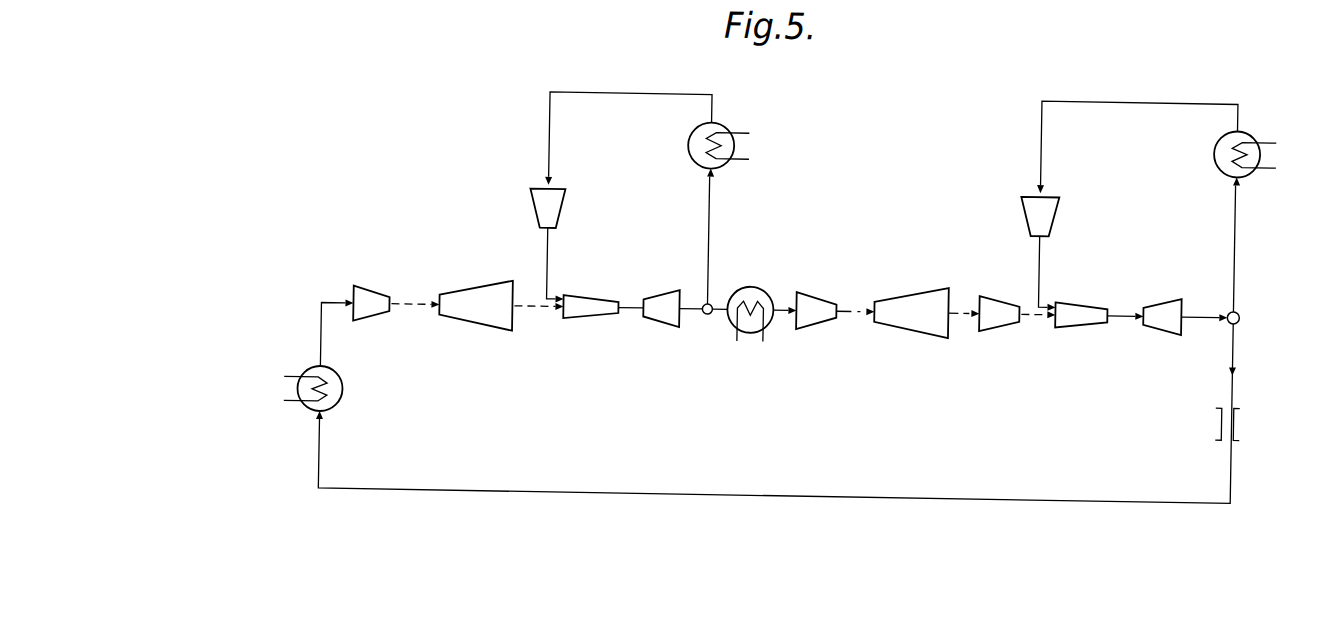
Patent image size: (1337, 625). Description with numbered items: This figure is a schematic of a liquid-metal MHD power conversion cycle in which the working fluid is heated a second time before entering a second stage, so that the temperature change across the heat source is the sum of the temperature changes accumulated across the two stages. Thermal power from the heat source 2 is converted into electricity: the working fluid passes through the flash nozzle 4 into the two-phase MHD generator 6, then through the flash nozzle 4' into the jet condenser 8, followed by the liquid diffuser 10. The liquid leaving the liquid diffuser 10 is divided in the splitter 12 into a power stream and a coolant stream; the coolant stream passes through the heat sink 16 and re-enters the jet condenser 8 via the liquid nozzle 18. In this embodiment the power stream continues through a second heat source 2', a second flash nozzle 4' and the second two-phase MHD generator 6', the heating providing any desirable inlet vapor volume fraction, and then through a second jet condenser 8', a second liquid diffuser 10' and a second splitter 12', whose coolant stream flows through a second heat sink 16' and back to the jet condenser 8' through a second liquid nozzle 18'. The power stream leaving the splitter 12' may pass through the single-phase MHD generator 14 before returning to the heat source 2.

The heat source 2 is at (280, 396).
The flash nozzle 4 is at (374, 308).
The two-phase MHD generator 6 is at (477, 295).
The condenser 8 is at (591, 302).
The liquid diffuser 10 is at (656, 301).
The splitter 12 is at (695, 330).
The single-phase MHD generator 14 is at (1240, 404).
The heat sink 16 is at (723, 145).
The liquid nozzle 18 is at (524, 208).
The heat source 2' is at (750, 321).
The second flash nozzle 4' is at (918, 306).
The second two-phase MHD generator 6' is at (911, 307).
The jet condenser 8' is at (1082, 311).
The liquid diffuser 10' is at (1161, 320).
The flow junction 12' is at (1257, 319).
The heat sink 16' is at (1249, 154).
The liquid nozzle 18' is at (1018, 216).